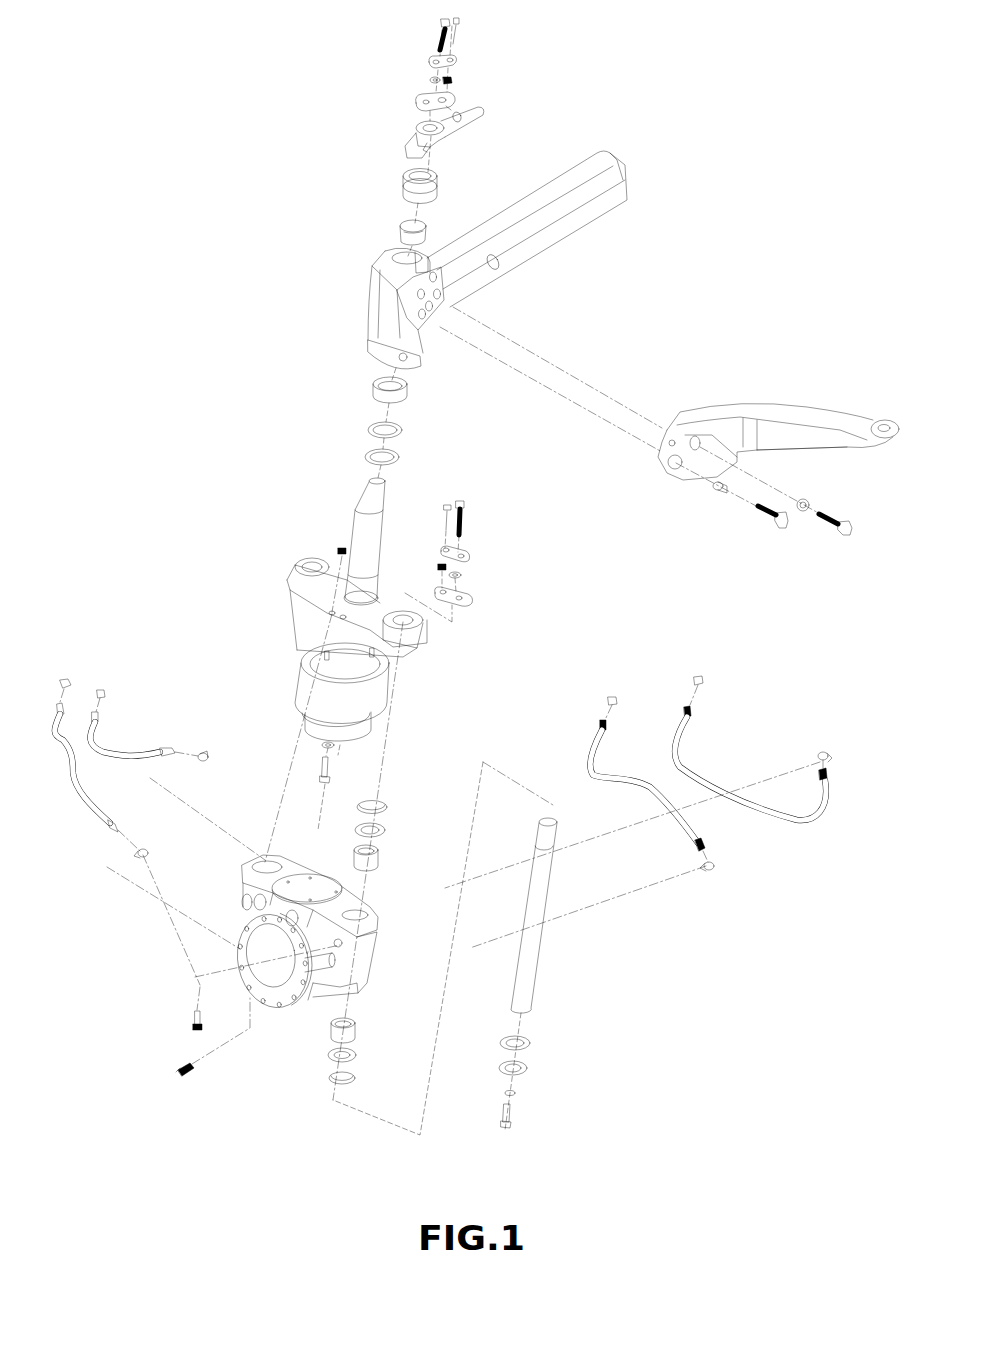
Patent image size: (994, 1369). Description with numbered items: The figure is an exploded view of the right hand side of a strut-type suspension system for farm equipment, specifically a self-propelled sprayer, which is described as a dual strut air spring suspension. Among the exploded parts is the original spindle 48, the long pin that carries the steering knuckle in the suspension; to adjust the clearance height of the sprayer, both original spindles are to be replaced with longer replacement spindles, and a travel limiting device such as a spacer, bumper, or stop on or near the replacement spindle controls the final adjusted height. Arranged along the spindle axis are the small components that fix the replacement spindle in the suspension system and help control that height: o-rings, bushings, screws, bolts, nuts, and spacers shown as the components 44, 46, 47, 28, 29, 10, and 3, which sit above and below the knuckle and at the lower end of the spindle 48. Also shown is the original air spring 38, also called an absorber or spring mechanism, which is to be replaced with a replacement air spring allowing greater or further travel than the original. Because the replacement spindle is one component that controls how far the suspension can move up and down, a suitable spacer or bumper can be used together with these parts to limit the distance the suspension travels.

The spacer 3 is at (504, 1108).
The nut 10 is at (514, 1095).
The bolt 28 is at (530, 1068).
The screw 29 is at (530, 1047).
The original air spring 38 is at (302, 684).
The o-ring 44 is at (383, 805).
The bushing 46 is at (378, 864).
The o-ring 47 is at (383, 829).
The original spindle 48 is at (537, 970).